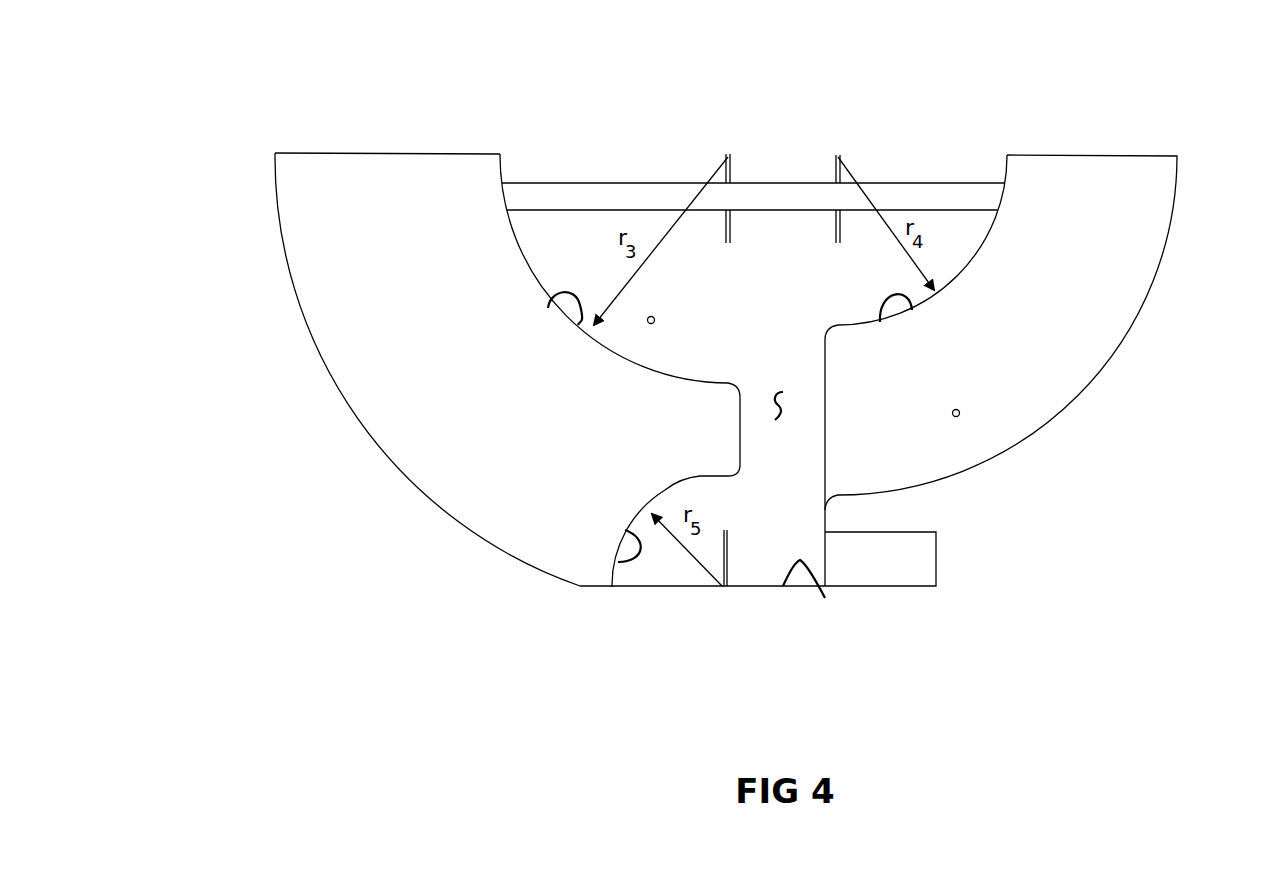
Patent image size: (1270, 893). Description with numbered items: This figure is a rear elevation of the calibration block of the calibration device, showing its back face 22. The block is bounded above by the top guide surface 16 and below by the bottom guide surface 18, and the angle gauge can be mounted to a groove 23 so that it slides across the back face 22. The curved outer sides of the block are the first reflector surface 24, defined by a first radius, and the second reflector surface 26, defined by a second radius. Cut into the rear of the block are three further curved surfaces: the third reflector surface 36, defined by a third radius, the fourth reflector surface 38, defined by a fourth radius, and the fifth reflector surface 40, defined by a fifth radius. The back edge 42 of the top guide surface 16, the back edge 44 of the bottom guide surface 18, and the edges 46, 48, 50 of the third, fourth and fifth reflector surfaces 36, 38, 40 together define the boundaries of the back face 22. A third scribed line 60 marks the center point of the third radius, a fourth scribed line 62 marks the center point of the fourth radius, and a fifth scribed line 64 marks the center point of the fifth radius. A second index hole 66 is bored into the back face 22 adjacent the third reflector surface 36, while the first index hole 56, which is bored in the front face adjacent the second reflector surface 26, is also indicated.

The top guide surface 16 is at (430, 153).
The bottom guide surface 18 is at (670, 588).
The back face 22 is at (785, 400).
The groove 23 is at (592, 190).
The first reflector surface 24 is at (277, 205).
The second reflector surface 26 is at (1170, 248).
The third reflector surface 36 is at (517, 237).
The fourth reflector surface 38 is at (983, 250).
The fifth reflector surface 40 is at (665, 490).
The back edge of the top guide surface 42 is at (985, 154).
The back edge of the bottom guide surface 44 is at (825, 598).
The edge of the third reflector surface 46 is at (556, 297).
The edge of the fourth reflector surface 48 is at (912, 310).
The edge of the fifth reflector surface 50 is at (625, 530).
The first index hole 56 is at (957, 417).
The third scribed line 60 is at (735, 172).
The fourth scribed line 62 is at (842, 166).
The fifth scribed line 64 is at (728, 556).
The second index hole 66 is at (650, 324).